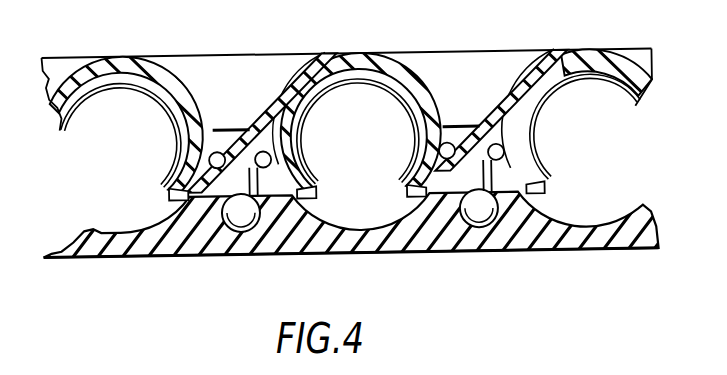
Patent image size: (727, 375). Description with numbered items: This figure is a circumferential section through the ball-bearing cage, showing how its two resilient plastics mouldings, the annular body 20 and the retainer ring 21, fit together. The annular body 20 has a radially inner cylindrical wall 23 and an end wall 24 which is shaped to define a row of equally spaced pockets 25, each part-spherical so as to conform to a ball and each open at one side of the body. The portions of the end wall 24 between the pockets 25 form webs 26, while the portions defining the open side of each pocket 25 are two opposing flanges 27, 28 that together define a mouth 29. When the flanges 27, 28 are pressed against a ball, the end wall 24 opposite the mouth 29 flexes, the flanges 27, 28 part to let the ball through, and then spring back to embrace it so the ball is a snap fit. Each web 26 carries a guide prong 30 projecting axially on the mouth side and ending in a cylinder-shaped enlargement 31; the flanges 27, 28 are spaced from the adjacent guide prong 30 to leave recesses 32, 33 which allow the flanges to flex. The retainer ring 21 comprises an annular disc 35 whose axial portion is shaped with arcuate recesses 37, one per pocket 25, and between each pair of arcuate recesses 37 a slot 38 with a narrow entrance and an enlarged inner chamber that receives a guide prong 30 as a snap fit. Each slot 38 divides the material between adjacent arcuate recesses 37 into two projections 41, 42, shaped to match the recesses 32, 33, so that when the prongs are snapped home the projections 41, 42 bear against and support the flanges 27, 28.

The annular body 20 is at (360, 58).
The retainer ring 21 is at (347, 258).
The radially inner cylindrical wall 23 is at (470, 50).
The end wall 24 is at (310, 70).
The pocket 25 is at (108, 95).
The web 26 is at (233, 127).
The flange 27 is at (304, 186).
The flange 28 is at (172, 191).
The mouth 29 is at (330, 205).
The guide prong 30 is at (203, 163).
The cylinder-shaped enlargement 31 is at (242, 214).
The recess 32 is at (263, 150).
The recess 33 is at (216, 148).
The annular disc 35 is at (423, 253).
The arcuate recess 37 is at (125, 228).
The slot 38 is at (200, 258).
The projection 41 is at (290, 160).
The projection 42 is at (187, 210).